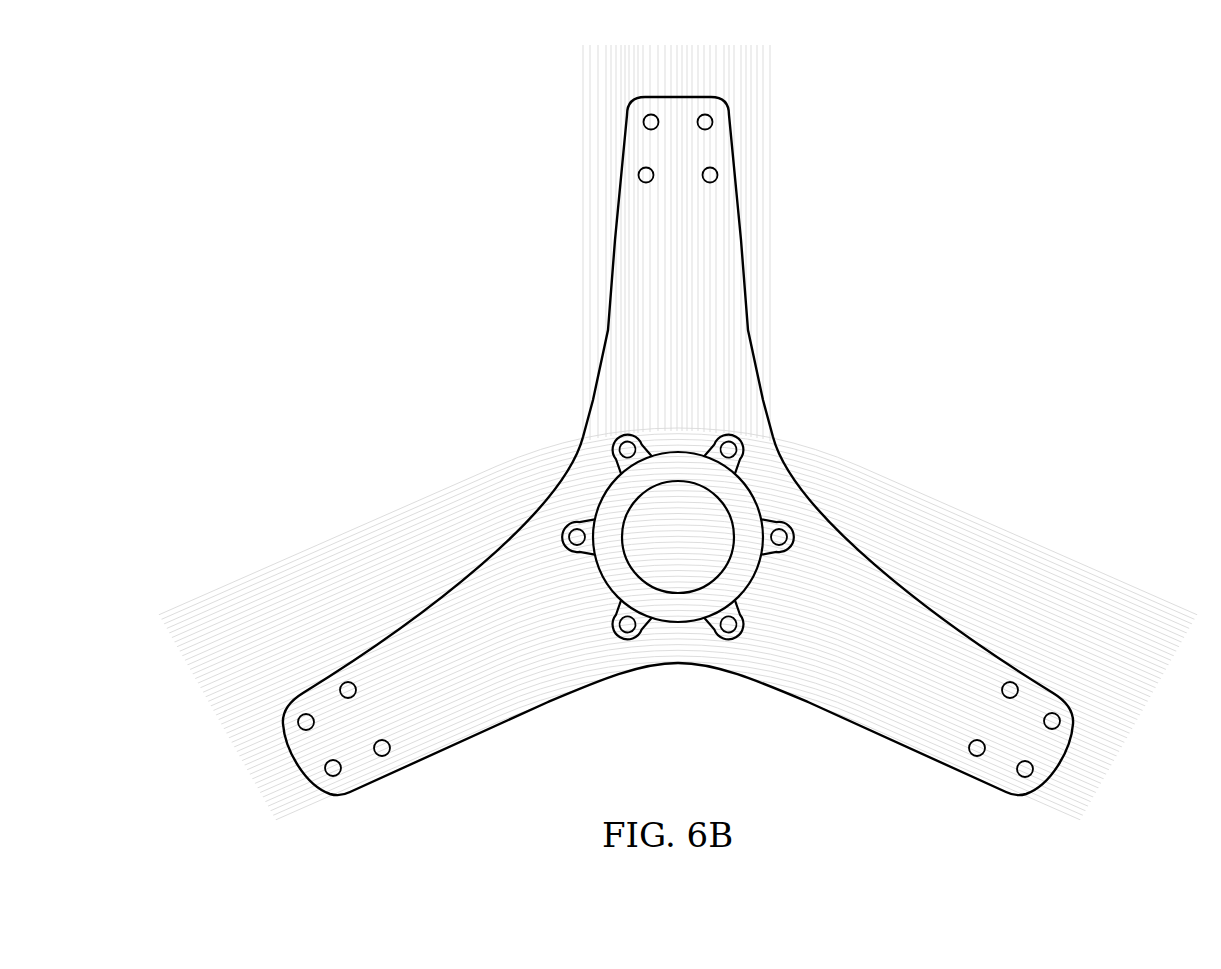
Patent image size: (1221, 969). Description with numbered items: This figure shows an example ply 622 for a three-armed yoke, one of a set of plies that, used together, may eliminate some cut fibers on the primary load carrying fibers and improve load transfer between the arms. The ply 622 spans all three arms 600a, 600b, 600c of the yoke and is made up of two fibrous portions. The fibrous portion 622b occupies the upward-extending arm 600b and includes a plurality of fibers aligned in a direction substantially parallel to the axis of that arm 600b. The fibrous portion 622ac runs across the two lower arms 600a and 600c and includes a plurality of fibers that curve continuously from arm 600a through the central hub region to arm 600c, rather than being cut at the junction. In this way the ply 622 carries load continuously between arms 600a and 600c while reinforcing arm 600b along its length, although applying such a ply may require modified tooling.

The ply 622 is at (678, 460).
The fibrous portion 622b is at (768, 262).
The fibrous portion 622ac is at (860, 447).
The arm 600a is at (906, 770).
The arm 600b is at (558, 221).
The arm 600c is at (452, 770).